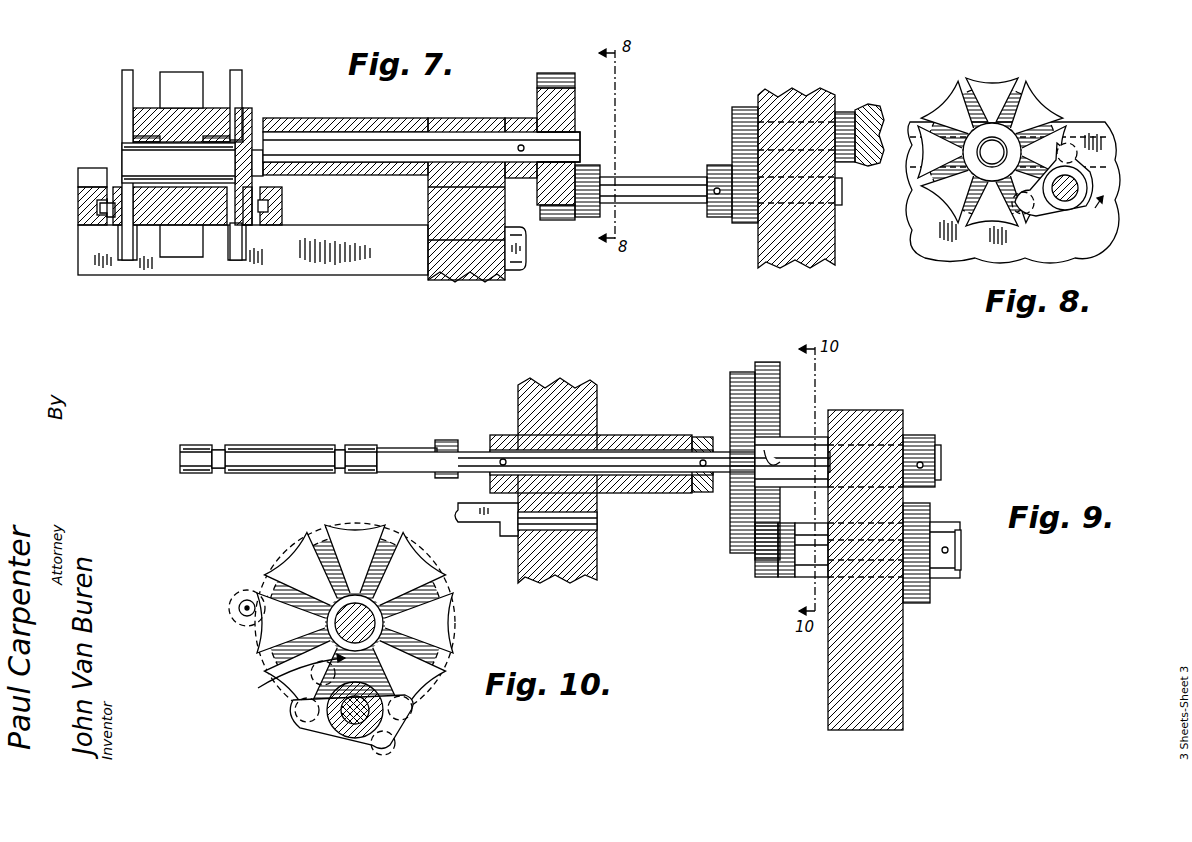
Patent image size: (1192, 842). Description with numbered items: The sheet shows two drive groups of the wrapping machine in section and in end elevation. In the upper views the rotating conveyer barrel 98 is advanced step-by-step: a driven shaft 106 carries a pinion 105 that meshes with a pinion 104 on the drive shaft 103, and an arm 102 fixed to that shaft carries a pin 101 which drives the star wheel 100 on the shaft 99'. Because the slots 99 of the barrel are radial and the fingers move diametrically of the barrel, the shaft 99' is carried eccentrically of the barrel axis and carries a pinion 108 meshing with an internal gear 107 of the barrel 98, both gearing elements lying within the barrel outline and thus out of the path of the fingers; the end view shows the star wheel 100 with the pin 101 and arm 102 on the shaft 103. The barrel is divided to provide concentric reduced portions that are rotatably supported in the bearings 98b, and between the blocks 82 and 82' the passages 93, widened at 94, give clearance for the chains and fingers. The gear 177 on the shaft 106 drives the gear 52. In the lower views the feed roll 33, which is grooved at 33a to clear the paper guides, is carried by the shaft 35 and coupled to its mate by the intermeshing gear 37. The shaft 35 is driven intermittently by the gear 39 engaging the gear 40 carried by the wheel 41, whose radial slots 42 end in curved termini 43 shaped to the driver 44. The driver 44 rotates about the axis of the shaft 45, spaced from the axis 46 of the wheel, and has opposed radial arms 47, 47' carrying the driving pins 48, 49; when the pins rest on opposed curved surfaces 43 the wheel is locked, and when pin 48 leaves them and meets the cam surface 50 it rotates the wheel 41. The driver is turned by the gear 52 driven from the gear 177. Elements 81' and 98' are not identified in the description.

In FIG. 9, the feed roll 33 is at (315, 458).
In FIG. 9, the groove of feed roll 33a is at (218, 450).
In FIG. 9, the shaft 35 is at (724, 480).
In FIG. 9, the gear 37 is at (448, 443).
In FIG. 9, the gear 39 is at (735, 457).
In FIG. 10, the gear 39 is at (236, 609).
In FIG. 9, the gear 40 is at (742, 380).
In FIG. 10, the gear 40 is at (270, 622).
In FIG. 9, the wheel 41 is at (769, 376).
In FIG. 10, the wheel 41 is at (403, 627).
In FIG. 9, the radial slot 42 is at (771, 458).
In FIG. 10, the radial slot 42 is at (375, 577).
In FIG. 9, the curved terminus 43 is at (526, 519).
In FIG. 10, the curved terminus 43 is at (423, 557).
In FIG. 9, the driver 44 is at (763, 557).
In FIG. 10, the driver 44 is at (342, 735).
In FIG. 9, the shaft 45 is at (962, 551).
In FIG. 10, the shaft 45 is at (357, 724).
In FIG. 10, the axis 46 is at (325, 598).
In FIG. 10, the radial arm 47 is at (341, 730).
In FIG. 9, the radial arm 47' is at (789, 591).
In FIG. 10, the radial arm 47' is at (417, 725).
In FIG. 10, the driving pin 48 is at (296, 712).
In FIG. 9, the driving pin 49 is at (768, 563).
In FIG. 10, the driving pin 49 is at (385, 730).
In FIG. 10, the cam surface 50 is at (286, 675).
In FIG. 9, the gear 52 is at (923, 603).
In FIG. 7, the base 81' is at (234, 246).
In FIG. 7, the block 82 is at (180, 248).
In FIG. 7, the block 82' is at (289, 206).
In FIG. 7, the passage 93 is at (107, 186).
In FIG. 7, the widened portion of passage 94 is at (96, 209).
In FIG. 7, the rotating conveyer barrel 98 is at (205, 71).
In FIG. 7, the toothed sleeve 98' is at (162, 123).
In FIG. 7, the bearing 98b is at (222, 228).
In FIG. 7, the slot 99 is at (199, 150).
In FIG. 7, the shaft 99' is at (421, 184).
In FIG. 8, the shaft 99' is at (1010, 145).
In FIG. 7, the star wheel 100 is at (542, 86).
In FIG. 8, the star wheel 100 is at (1050, 104).
In FIG. 7, the pin 101 is at (561, 218).
In FIG. 8, the pin 101 is at (985, 257).
In FIG. 7, the arm 102 is at (598, 178).
In FIG. 8, the arm 102 is at (1046, 216).
In FIG. 7, the drive shaft 103 is at (686, 204).
In FIG. 8, the drive shaft 103 is at (1094, 187).
In FIG. 7, the pinion 104 is at (749, 218).
In FIG. 7, the pinion 105 is at (746, 105).
In FIG. 7, the driven shaft 106 is at (868, 126).
In FIG. 7, the internal gear 107 is at (250, 208).
In FIG. 7, the pinion 108 is at (243, 130).
In FIG. 7, the gear 177 is at (845, 114).